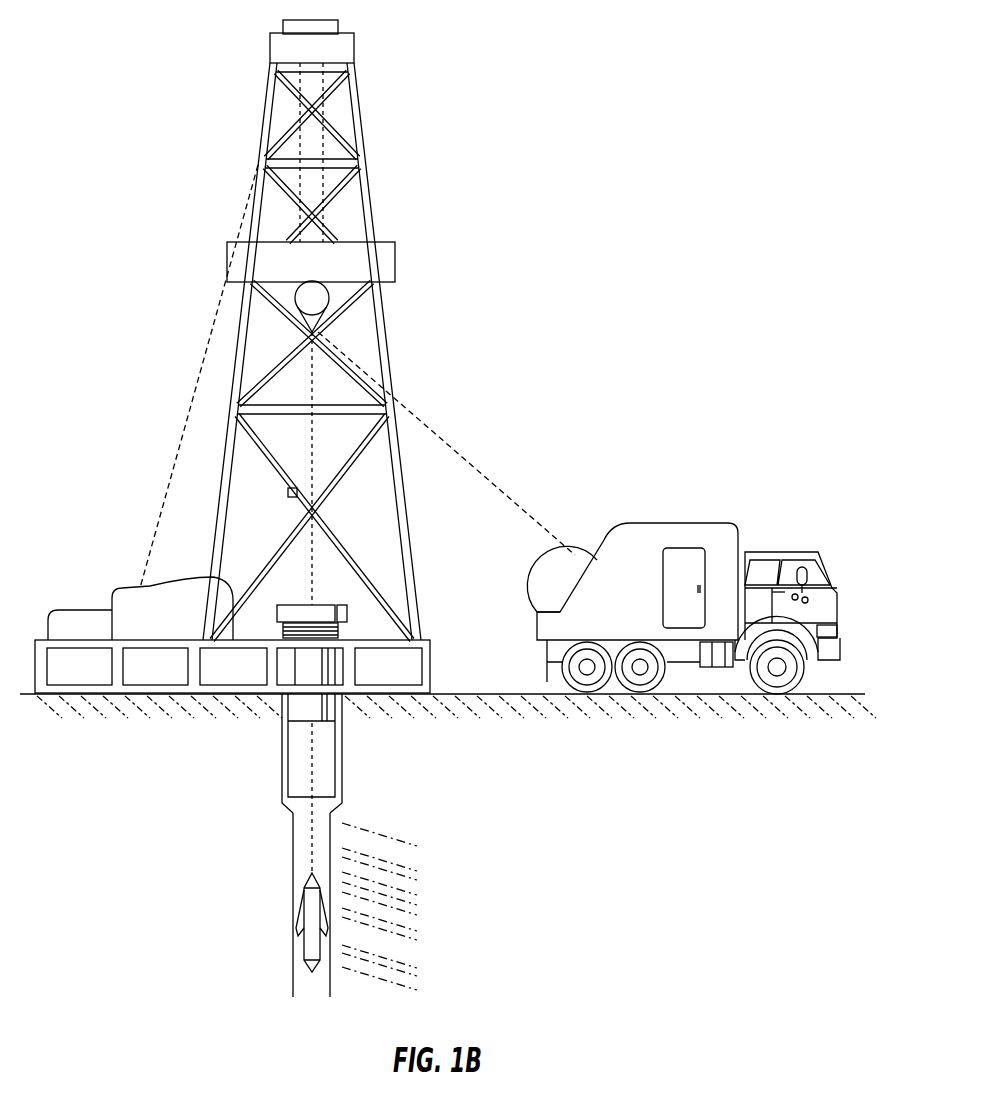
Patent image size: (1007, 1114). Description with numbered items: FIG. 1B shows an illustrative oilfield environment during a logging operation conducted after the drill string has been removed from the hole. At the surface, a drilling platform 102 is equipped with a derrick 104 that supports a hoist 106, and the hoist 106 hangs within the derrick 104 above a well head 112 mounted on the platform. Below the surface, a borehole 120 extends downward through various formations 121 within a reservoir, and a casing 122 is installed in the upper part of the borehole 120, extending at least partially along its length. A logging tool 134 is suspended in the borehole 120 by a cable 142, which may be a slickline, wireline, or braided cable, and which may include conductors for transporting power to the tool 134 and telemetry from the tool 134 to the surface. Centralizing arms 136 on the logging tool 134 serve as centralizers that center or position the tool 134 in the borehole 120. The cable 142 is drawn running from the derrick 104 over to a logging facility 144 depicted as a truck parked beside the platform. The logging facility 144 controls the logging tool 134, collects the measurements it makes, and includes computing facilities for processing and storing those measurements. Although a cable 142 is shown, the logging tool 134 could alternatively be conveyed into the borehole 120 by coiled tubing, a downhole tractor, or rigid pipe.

The drilling platform 102 is at (432, 670).
The derrick 104 is at (420, 600).
The hoist 106 is at (315, 317).
The well head 112 is at (337, 603).
The borehole 120 is at (293, 840).
The formations 121 is at (423, 850).
The casing 122 is at (282, 765).
The logging tool 134 is at (312, 905).
The centralizing arms 136 is at (297, 927).
The cable 142 is at (435, 428).
The logging facility 144 is at (648, 523).